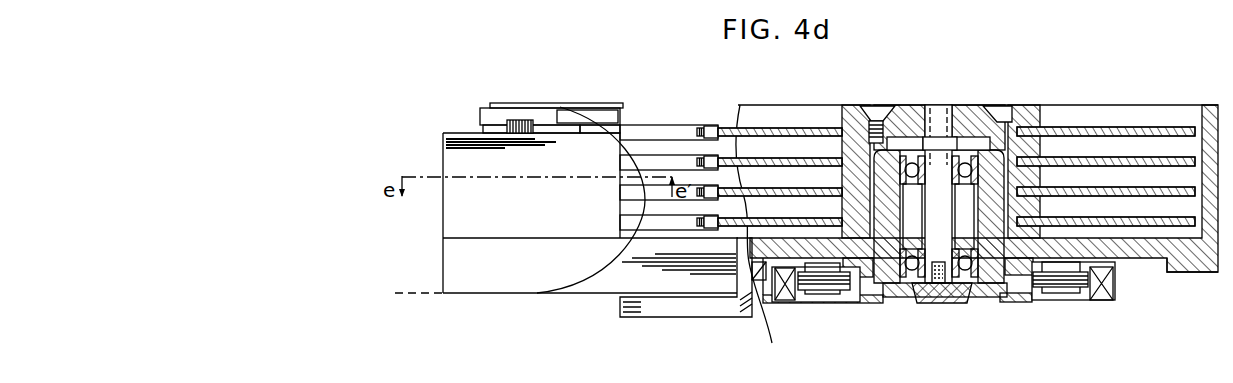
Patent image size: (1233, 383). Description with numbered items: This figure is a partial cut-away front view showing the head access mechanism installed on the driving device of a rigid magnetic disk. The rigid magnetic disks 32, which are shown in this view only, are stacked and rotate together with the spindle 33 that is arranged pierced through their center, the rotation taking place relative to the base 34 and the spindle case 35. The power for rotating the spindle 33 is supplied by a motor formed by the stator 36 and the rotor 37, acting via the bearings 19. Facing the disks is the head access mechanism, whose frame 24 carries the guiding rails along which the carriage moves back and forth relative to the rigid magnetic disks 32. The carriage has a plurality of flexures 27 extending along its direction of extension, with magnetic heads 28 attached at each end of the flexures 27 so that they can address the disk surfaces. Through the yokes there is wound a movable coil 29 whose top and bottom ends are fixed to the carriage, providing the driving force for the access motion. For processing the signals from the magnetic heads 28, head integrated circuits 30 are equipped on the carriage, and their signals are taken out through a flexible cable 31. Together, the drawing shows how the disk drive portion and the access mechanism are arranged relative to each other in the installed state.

The bearings 19 is at (907, 272).
The frame 24 is at (643, 290).
The flexures 27 is at (655, 123).
The magnetic heads 28 is at (710, 124).
The movable coil 29 is at (522, 120).
The head integrated circuits 30 is at (593, 114).
The flexible cable 31 is at (593, 279).
The rigid magnetic disks 32 is at (1097, 128).
The spindle 33 is at (938, 112).
The base 34 is at (681, 299).
The spindle case 35 is at (1133, 248).
The stator 36 is at (1040, 288).
The rotor 37 is at (1080, 301).